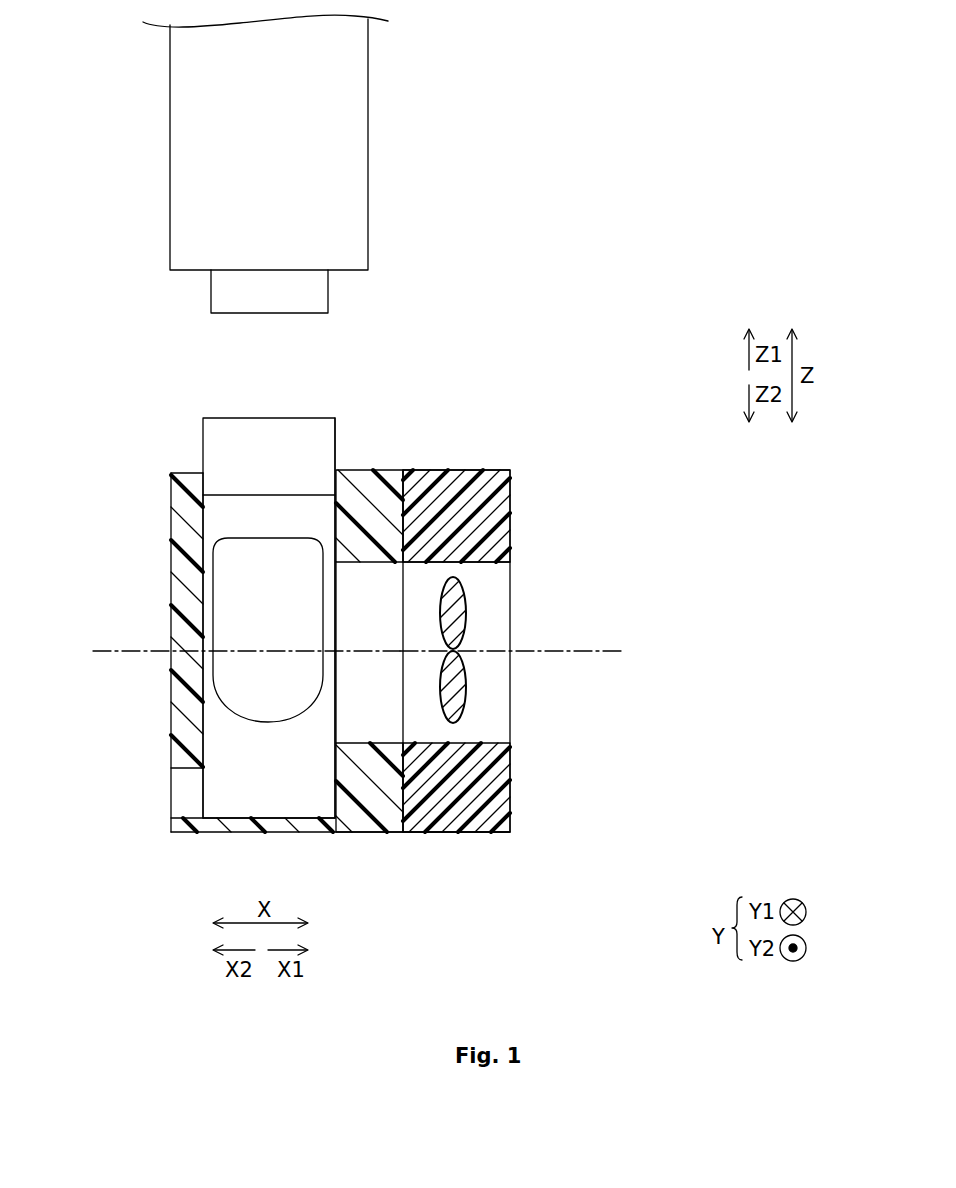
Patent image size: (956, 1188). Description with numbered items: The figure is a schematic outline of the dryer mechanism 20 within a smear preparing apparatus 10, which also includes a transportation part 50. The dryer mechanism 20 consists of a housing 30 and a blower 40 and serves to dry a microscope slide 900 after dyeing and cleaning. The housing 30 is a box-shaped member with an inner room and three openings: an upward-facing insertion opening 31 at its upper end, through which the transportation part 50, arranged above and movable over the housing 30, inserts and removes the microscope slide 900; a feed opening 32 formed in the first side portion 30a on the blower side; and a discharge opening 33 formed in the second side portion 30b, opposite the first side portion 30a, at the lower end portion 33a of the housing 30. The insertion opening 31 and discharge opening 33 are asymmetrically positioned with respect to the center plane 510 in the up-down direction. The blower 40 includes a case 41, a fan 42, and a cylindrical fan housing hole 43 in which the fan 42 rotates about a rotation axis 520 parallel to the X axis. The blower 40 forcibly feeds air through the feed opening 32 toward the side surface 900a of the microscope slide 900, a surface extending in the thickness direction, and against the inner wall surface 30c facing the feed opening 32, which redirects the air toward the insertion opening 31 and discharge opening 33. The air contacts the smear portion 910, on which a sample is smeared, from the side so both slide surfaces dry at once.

The smear preparing apparatus 10 is at (562, 211).
The dryer mechanism 20 is at (405, 351).
The housing 30 is at (282, 616).
The first side portion 30a is at (411, 486).
The second side portion 30b is at (171, 620).
The inner wall surface 30c is at (204, 705).
The insertion opening 31 is at (210, 478).
The feed opening 32 is at (345, 742).
The discharge opening 33 is at (282, 814).
The lower end portion 33a is at (185, 818).
The blower 40 is at (491, 616).
The case 41 is at (495, 510).
The fan 42 is at (462, 622).
The fan housing hole 43 is at (490, 562).
The transportation part 50 is at (386, 150).
The center plane 510 is at (115, 655).
The rotation axis 520 is at (592, 646).
The microscope slide 900 is at (289, 581).
The side surface 900a is at (335, 446).
The smear portion 910 is at (258, 568).